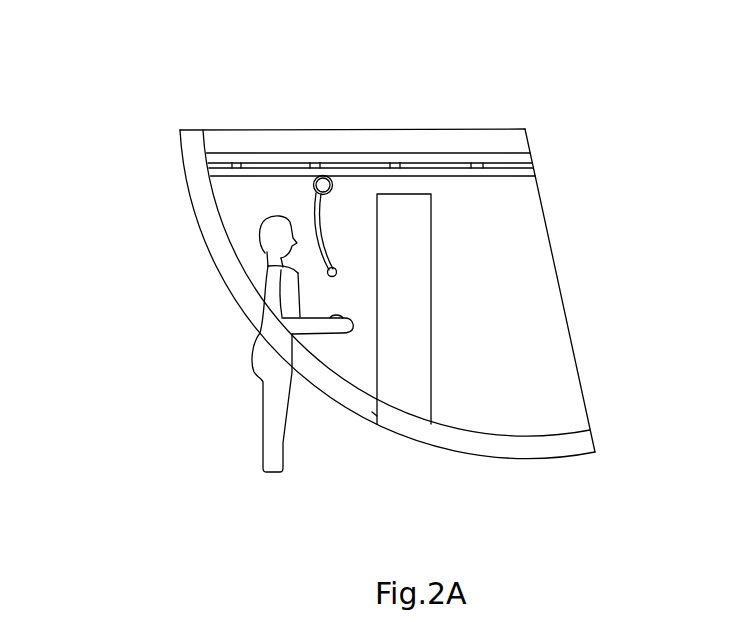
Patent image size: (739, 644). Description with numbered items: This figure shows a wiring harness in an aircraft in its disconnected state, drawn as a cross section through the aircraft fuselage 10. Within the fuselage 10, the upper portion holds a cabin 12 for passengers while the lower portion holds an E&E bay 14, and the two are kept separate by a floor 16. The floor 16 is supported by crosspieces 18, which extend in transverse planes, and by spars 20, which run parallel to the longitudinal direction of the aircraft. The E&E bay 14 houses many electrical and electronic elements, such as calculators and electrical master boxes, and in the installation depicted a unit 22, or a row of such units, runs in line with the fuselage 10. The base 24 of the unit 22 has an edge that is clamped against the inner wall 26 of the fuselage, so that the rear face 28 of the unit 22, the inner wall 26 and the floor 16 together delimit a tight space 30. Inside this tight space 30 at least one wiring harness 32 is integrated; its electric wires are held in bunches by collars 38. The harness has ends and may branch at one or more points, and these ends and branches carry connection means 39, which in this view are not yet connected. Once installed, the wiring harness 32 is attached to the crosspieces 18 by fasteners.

The aircraft fuselage 10 is at (189, 154).
The cabin 12 is at (370, 104).
The E&E bay 14 is at (540, 290).
The floor 16 is at (500, 154).
The crosspieces 18 is at (523, 172).
The spars 20 is at (394, 163).
The unit 22 is at (423, 391).
The base 24 is at (348, 382).
The inner wall 26 is at (372, 412).
The rear face 28 is at (334, 318).
The tight space 30 is at (271, 332).
The wiring harness 32 is at (333, 185).
The collars 38 is at (332, 193).
The connection means 39 is at (337, 270).